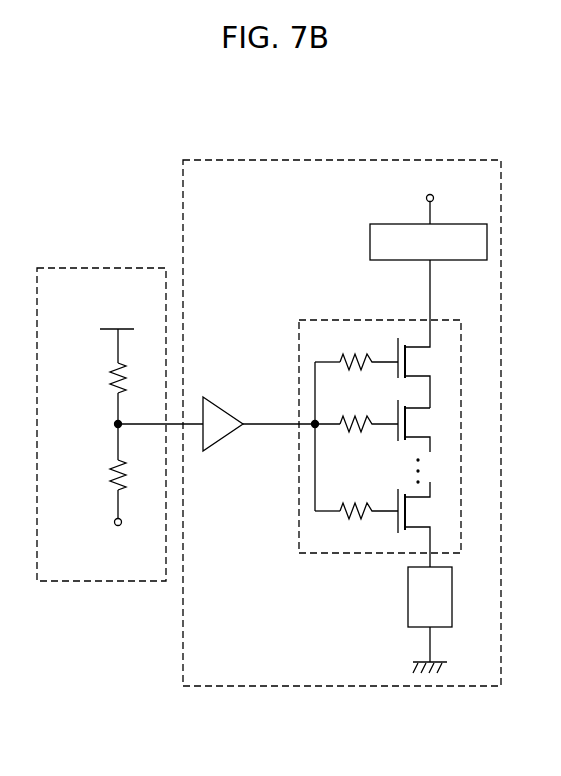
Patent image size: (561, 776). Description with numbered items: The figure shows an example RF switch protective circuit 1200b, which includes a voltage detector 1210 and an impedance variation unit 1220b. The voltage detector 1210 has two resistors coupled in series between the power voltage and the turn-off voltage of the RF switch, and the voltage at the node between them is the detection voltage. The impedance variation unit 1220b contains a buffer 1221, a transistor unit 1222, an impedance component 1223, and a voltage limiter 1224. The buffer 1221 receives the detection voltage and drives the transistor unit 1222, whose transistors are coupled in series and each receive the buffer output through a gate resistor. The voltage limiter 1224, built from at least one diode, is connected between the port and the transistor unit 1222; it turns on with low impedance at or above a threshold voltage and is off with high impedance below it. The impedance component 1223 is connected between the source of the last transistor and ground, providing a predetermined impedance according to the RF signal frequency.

The RF switch protective circuit 1200b is at (252, 113).
The voltage detector 1210 is at (101, 268).
The impedance variation unit 1220b is at (380, 160).
The buffer 1221 is at (218, 400).
The transistor unit 1222 is at (336, 320).
The impedance component 1223 is at (408, 597).
The voltage limiter 1224 is at (370, 243).